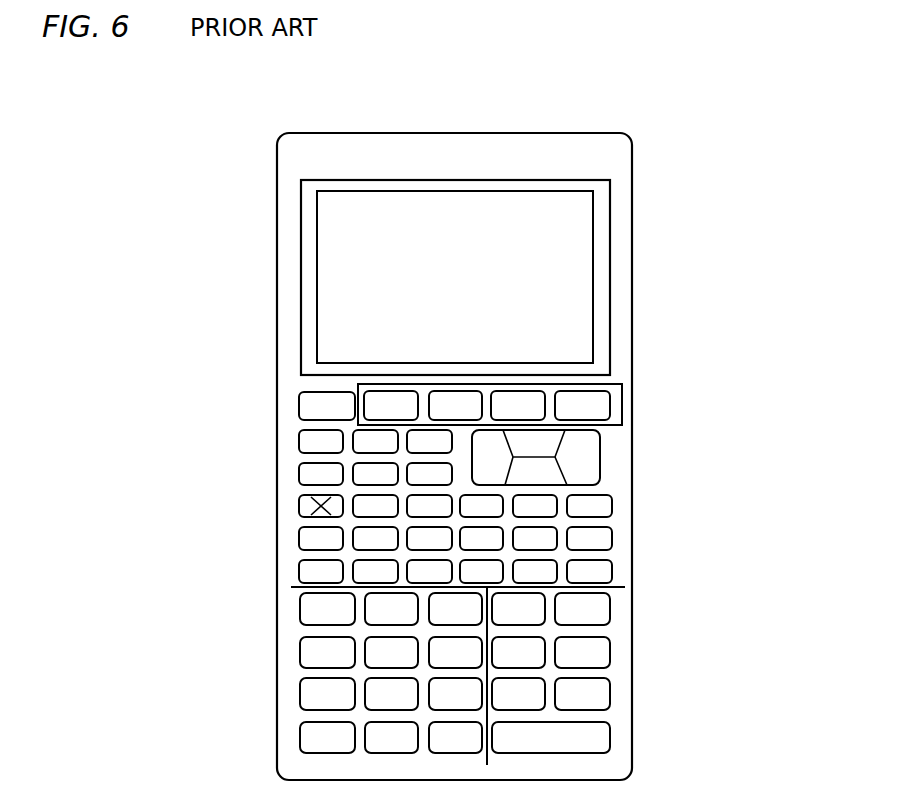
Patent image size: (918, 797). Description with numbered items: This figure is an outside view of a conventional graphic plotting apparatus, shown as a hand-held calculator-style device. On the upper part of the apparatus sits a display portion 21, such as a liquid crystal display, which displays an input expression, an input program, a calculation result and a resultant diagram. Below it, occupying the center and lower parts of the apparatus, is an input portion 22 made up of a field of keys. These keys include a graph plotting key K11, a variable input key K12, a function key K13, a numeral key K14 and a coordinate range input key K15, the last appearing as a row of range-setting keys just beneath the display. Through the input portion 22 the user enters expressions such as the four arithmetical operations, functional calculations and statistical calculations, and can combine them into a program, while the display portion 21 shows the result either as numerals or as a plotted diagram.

The display portion 21 is at (593, 290).
The input portion 22 is at (637, 383).
The graph plotting key K11 is at (305, 391).
The variable input key K12 is at (308, 495).
The function key K13 is at (279, 525).
The numeral key K14 is at (270, 592).
The coordinate range input key K15 is at (612, 384).